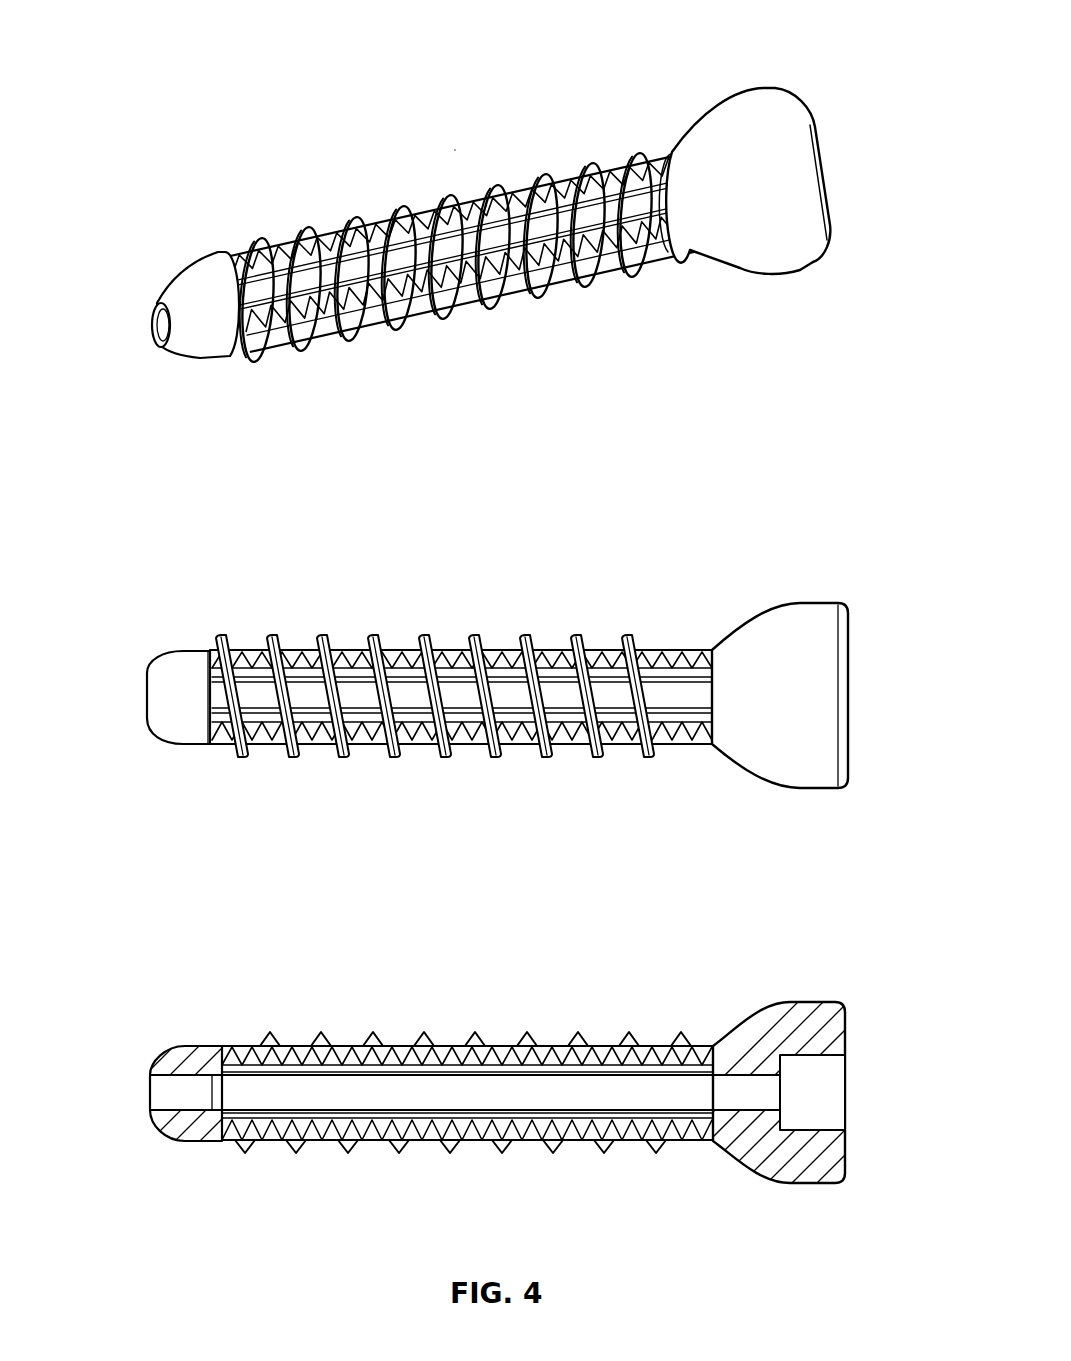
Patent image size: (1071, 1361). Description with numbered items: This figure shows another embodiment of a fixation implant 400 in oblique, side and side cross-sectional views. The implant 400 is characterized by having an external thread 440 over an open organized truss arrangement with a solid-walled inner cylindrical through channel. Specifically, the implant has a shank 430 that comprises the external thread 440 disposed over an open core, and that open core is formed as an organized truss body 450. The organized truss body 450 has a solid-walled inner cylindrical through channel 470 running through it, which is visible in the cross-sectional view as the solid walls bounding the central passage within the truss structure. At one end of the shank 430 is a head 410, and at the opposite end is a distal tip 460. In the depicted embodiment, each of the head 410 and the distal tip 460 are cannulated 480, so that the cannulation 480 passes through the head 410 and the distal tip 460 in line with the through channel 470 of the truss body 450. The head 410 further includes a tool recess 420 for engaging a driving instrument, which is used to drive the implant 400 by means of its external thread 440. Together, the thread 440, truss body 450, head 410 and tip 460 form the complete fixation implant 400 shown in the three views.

The bone screw 400 is at (210, 100).
The head 410 is at (745, 88).
The tool recess 420 is at (818, 1063).
The shank 430 is at (377, 222).
The external thread 440 is at (443, 192).
The organized truss body 450 is at (541, 193).
The distal tip 460 is at (202, 265).
The solid-walled inner cylindrical through channel 470 is at (572, 1128).
The cannulation 480 is at (160, 333).